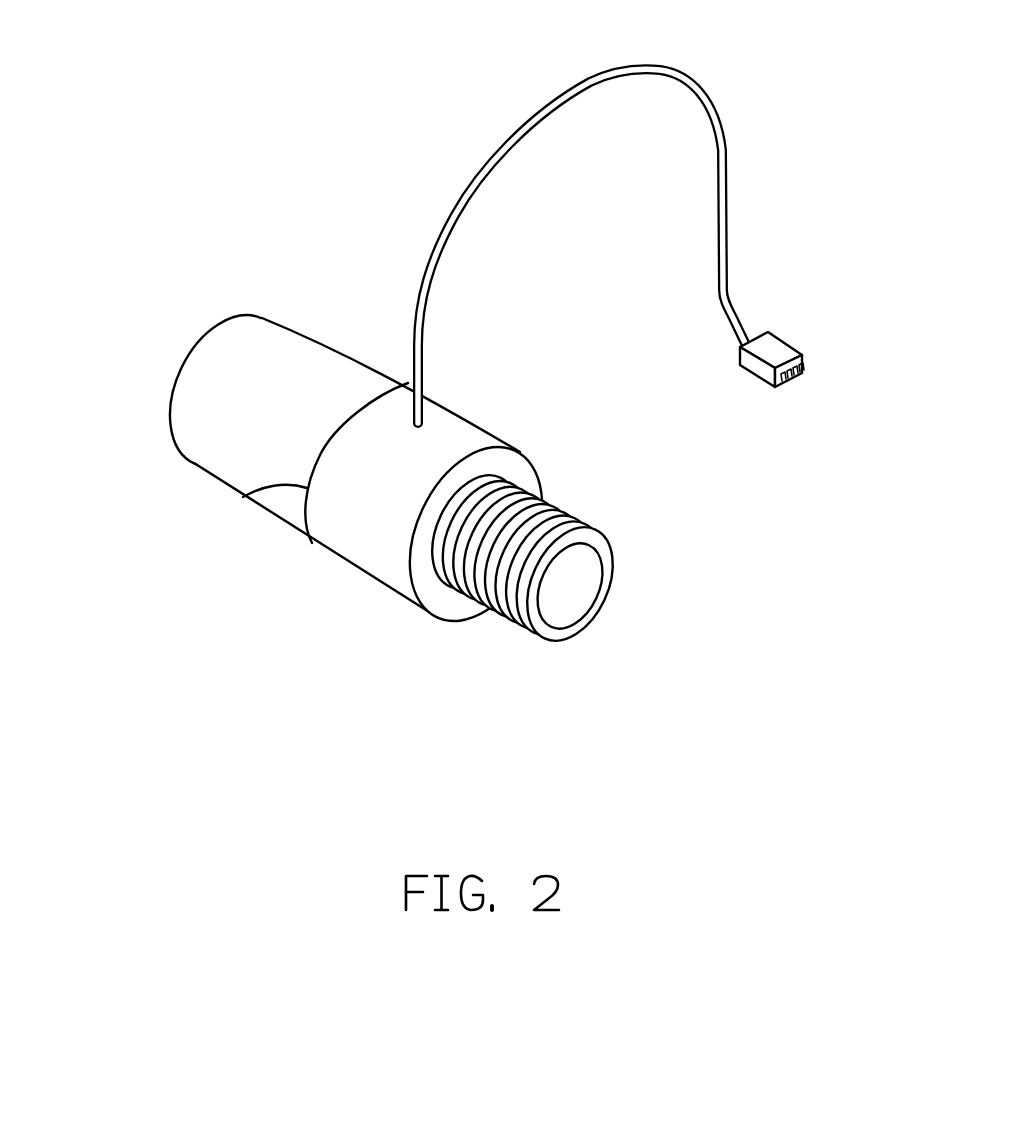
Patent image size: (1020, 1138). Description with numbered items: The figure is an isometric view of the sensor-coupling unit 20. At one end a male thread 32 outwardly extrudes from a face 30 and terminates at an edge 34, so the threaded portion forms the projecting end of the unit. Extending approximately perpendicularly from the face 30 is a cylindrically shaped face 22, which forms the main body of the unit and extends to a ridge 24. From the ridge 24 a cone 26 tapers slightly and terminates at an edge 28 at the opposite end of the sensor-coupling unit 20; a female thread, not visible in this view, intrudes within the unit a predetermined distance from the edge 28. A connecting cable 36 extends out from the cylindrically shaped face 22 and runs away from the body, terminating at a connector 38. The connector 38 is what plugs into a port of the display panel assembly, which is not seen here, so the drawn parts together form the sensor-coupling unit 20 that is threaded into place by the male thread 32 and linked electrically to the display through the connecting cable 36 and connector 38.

The sensor-coupling unit 20 is at (268, 97).
The cylindrically shaped face 22 is at (365, 533).
The ridge 24 is at (243, 497).
The cone 26 is at (298, 357).
The edge 28 is at (203, 358).
The face 30 is at (522, 468).
The male thread 32 is at (504, 610).
The edge 34 is at (545, 632).
The connecting cable 36 is at (478, 175).
The connector 38 is at (773, 347).